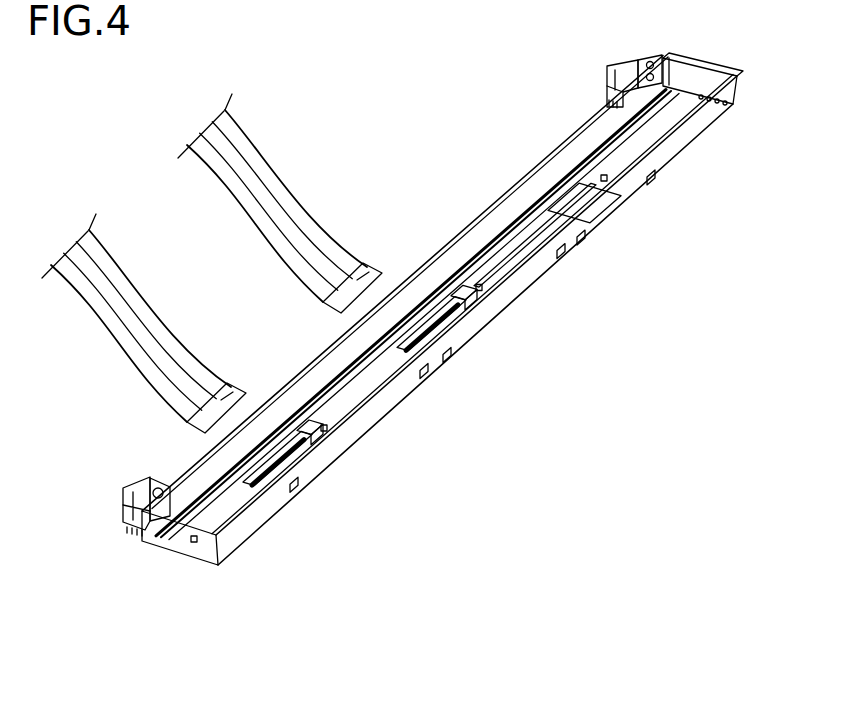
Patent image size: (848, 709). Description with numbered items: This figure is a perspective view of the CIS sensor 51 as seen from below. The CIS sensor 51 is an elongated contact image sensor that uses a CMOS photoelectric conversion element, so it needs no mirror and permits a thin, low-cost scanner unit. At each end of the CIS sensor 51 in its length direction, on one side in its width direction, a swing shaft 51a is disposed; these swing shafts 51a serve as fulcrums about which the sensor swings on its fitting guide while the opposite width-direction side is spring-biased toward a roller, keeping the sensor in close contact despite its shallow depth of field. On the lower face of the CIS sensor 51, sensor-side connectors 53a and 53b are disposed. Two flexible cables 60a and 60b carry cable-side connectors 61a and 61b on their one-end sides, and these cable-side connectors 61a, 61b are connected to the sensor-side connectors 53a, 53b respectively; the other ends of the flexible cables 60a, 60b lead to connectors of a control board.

The CIS sensor 51 is at (414, 309).
The swing shaft 51a is at (625, 60).
The sensor-side connector 53a is at (433, 338).
The sensor-side connector 53b is at (280, 473).
The flexible cable 60a is at (302, 202).
The flexible cable 60b is at (156, 312).
The cable-side connector 61a is at (372, 268).
The cable-side connector 61b is at (244, 387).